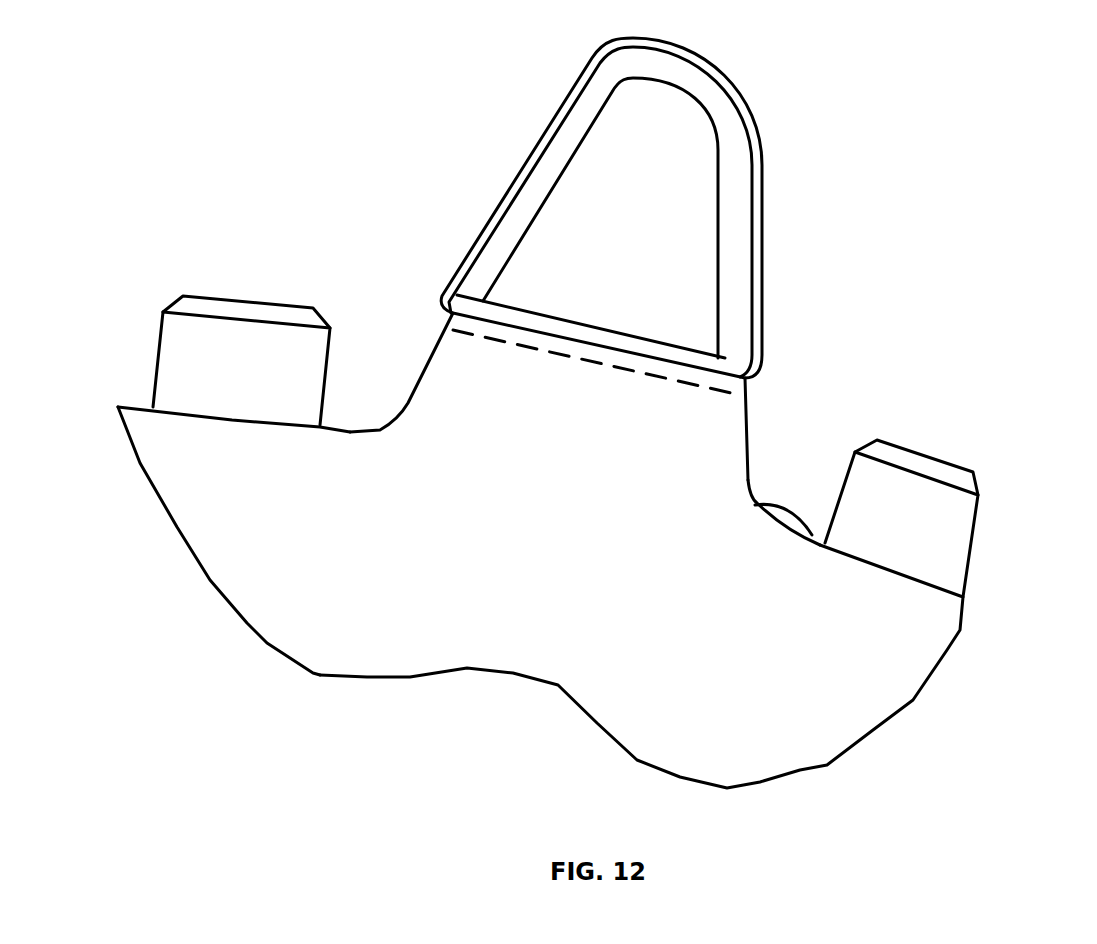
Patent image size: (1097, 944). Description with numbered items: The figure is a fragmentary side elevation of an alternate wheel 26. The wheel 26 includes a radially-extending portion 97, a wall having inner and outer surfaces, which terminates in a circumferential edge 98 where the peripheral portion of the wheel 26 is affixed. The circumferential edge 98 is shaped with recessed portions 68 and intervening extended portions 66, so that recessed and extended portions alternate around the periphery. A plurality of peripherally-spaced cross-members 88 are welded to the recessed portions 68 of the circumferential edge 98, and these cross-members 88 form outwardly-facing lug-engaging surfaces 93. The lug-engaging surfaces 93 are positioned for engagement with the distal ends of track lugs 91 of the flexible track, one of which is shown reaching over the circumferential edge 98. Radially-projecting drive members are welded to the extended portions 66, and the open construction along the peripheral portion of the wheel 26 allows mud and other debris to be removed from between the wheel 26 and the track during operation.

The wheel 26 is at (567, 645).
The extended portions 66 is at (717, 380).
The recessed portions 68 is at (357, 425).
The cross-members 88 is at (187, 350).
The track lugs 91 is at (693, 142).
The lug-engaging surfaces 93 is at (237, 302).
The radially-extending portion 97 is at (283, 610).
The circumferential edge 98 is at (230, 420).